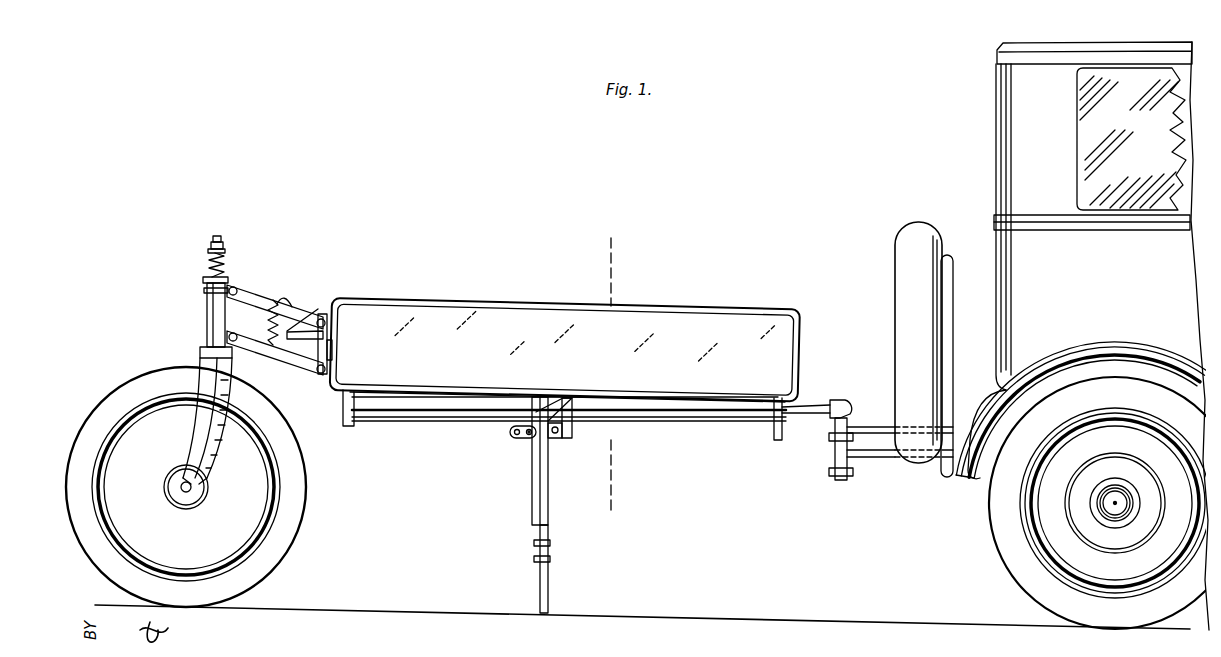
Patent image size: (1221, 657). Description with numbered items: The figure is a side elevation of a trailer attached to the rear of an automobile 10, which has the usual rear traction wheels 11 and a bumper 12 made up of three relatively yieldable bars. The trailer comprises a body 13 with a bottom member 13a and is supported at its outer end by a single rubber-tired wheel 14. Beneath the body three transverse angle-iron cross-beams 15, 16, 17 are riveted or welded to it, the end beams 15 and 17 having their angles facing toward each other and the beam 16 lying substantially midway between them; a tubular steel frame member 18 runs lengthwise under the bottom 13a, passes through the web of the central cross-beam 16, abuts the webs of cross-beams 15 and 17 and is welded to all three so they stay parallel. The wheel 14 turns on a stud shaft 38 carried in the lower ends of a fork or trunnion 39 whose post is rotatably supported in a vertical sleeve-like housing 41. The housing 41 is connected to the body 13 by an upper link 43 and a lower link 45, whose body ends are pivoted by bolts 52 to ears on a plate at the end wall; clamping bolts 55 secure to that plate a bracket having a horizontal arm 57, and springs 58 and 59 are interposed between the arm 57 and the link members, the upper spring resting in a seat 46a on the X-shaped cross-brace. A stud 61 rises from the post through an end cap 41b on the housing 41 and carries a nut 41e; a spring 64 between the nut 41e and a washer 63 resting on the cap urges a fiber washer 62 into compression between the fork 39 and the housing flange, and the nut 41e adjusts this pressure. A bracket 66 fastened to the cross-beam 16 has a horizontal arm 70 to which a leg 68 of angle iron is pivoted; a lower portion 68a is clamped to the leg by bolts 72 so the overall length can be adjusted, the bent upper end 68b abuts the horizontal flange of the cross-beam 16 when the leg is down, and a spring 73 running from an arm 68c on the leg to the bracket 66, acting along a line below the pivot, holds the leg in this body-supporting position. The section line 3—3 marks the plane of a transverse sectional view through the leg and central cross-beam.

The section line 3- 3 is at (618, 271).
The automobile 10 is at (1004, 242).
The rear or traction wheels 11 is at (1003, 546).
The bumper 12 is at (870, 463).
The trailer body 13 is at (565, 349).
The bottom member 13a is at (575, 362).
The single wheel 14 is at (285, 478).
The angle iron cross-beam 15 is at (348, 420).
The central cross-beam 16 is at (598, 420).
The angle iron cross-beam 17 is at (776, 433).
The tubular frame member 18 is at (708, 422).
The stud shaft 38 is at (188, 495).
The fork or trunnion 39 is at (203, 378).
The sleeve-like housing 41 is at (207, 314).
The end cap 41b is at (210, 290).
The nut 41e is at (208, 246).
The upper link 43 is at (257, 297).
The lower link 45 is at (252, 348).
The spring seat 46a is at (286, 298).
The bolts 52 is at (325, 316).
The clamping bolts 55 is at (330, 347).
The horizontally extending arm 57 is at (303, 330).
The spring 58 is at (270, 323).
The spring 59 is at (302, 342).
The stud 61 is at (213, 242).
The fiber washer 62 is at (210, 372).
The washer 63 is at (205, 280).
The spring 64 is at (208, 266).
The bracket 66 is at (568, 435).
The leg 68 is at (535, 522).
The lower portion of leg 68a is at (535, 588).
The bent portion 68b is at (560, 398).
The arm 68c is at (520, 440).
The horizontally extending arm 70 is at (555, 440).
The bolts 72 is at (552, 558).
The spring 73 is at (520, 445).